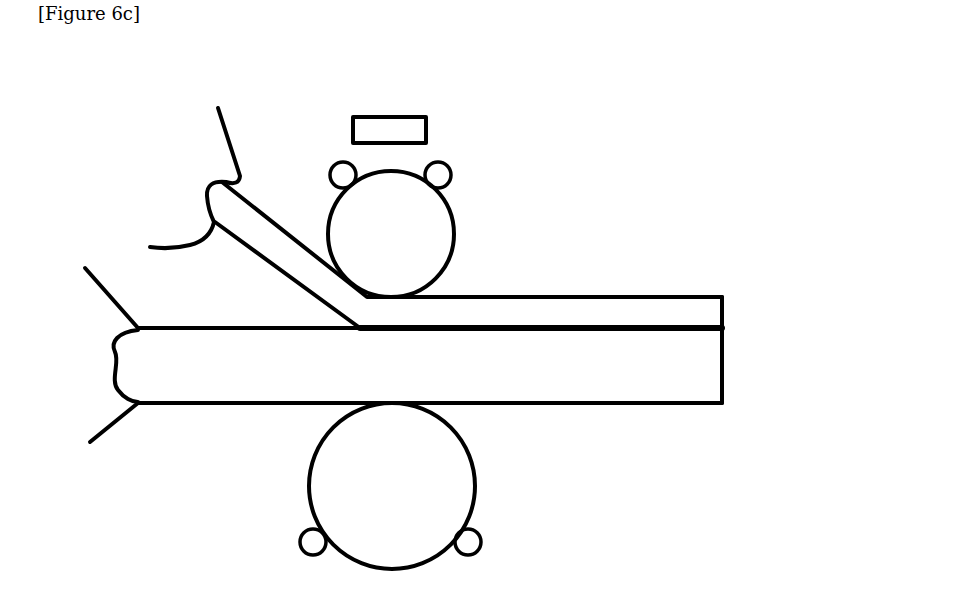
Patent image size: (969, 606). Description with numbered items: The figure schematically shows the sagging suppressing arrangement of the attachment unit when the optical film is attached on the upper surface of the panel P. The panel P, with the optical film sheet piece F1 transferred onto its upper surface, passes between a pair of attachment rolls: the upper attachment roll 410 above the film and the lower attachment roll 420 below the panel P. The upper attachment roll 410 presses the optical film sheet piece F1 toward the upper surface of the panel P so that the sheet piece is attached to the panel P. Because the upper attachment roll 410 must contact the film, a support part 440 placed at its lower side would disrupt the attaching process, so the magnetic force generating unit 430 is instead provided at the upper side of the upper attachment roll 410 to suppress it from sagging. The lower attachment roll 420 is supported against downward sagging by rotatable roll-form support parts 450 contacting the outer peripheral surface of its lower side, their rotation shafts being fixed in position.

The upper attachment roll 410 is at (433, 257).
The lower attachment roll 420 is at (457, 440).
The magnetic force generating unit 430 is at (427, 132).
The support part 440 is at (452, 172).
The support part 450 is at (480, 540).
The optical film sheet piece F1 is at (725, 308).
The panel P is at (725, 397).